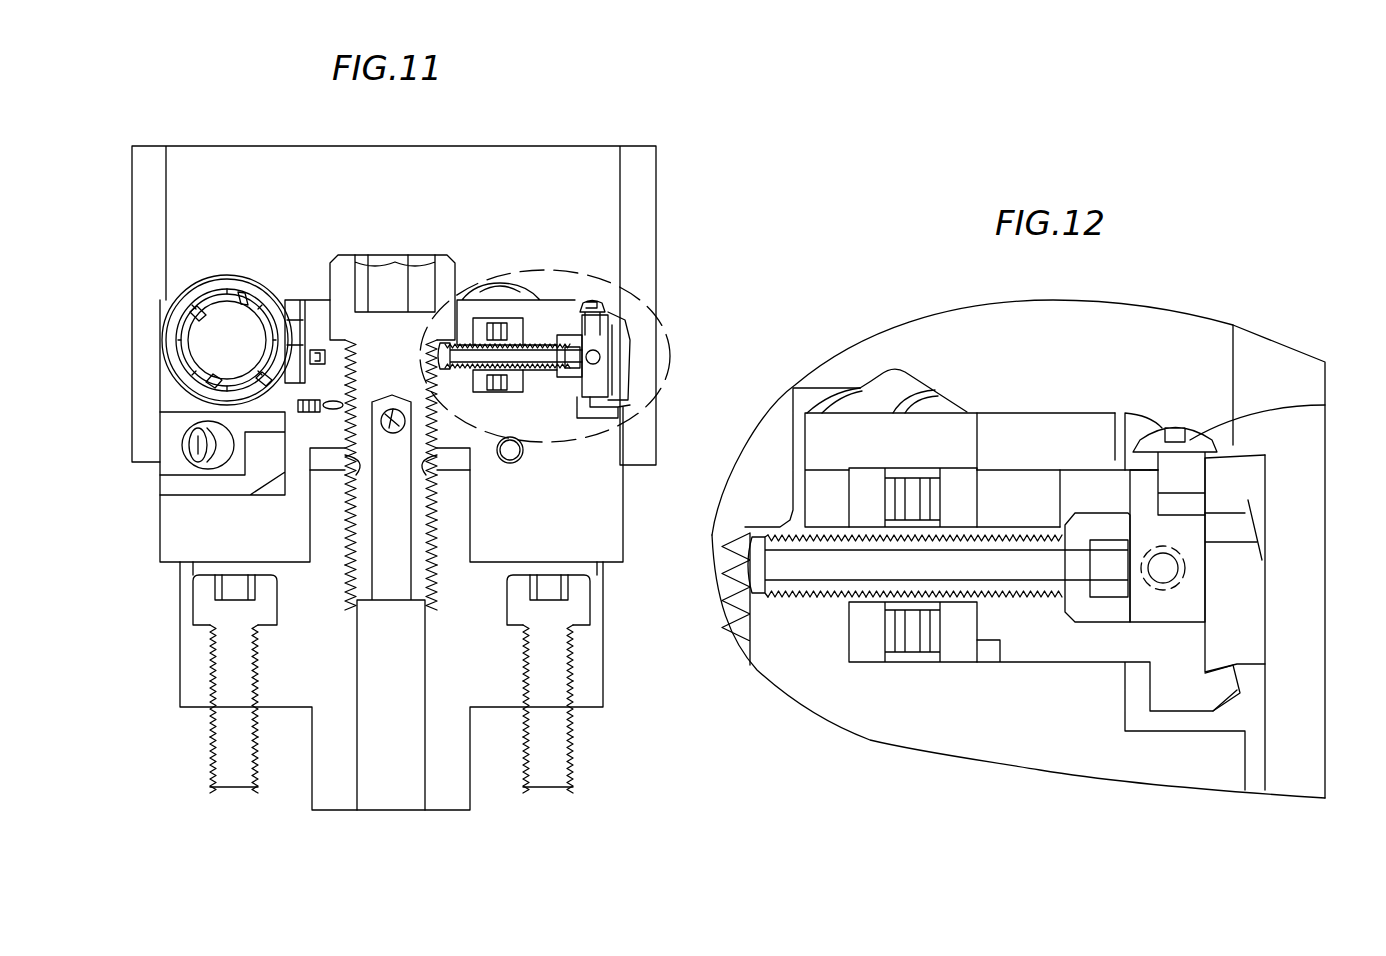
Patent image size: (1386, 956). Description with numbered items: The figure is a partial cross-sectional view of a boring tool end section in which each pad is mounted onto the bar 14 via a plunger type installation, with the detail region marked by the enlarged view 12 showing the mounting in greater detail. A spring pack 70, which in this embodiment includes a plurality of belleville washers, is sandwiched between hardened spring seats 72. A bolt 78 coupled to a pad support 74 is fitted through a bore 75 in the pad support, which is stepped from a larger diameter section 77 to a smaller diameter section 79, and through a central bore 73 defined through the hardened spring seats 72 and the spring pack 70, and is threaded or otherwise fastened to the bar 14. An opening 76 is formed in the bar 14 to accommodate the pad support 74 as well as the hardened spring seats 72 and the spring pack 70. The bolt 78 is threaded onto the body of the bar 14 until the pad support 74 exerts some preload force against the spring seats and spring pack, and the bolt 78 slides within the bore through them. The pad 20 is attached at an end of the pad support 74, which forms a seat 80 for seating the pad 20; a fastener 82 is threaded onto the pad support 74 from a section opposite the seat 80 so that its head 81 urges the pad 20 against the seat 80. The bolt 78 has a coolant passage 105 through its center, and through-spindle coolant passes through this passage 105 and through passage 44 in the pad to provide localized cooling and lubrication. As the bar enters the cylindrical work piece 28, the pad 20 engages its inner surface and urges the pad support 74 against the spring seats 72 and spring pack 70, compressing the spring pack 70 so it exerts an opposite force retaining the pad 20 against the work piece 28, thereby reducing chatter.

In FIG. 11, the detail view circle (FIG. 12) 12 is at (652, 316).
In FIG. 11, the bar 14 is at (628, 503).
In FIG. 12, the bar 14 is at (863, 468).
In FIG. 11, the pad 20 is at (625, 378).
In FIG. 12, the pad 20 is at (1240, 605).
In FIG. 11, the cylindrical work piece 28 is at (645, 190).
In FIG. 12, the cylindrical work piece 28 is at (1280, 467).
In FIG. 12, the passage 44 is at (1228, 522).
In FIG. 12, the spring pack 70 is at (908, 625).
In FIG. 12, the hardened spring seats 72 is at (865, 632).
In FIG. 12, the central bore 73 is at (953, 525).
In FIG. 12, the pad support 74 is at (1033, 447).
In FIG. 12, the bore 75 is at (1020, 628).
In FIG. 11, the opening 76 is at (555, 300).
In FIG. 12, the opening 76 is at (1003, 462).
In FIG. 12, the larger diameter section 77 is at (1100, 625).
In FIG. 12, the bolt 78 is at (1065, 600).
In FIG. 12, the smaller diameter section 79 is at (1002, 640).
In FIG. 12, the seat 80 is at (1228, 680).
In FIG. 12, the head 81 is at (1290, 411).
In FIG. 12, the fastener 82 is at (1192, 430).
In FIG. 12, the coolant passage 105 is at (725, 638).